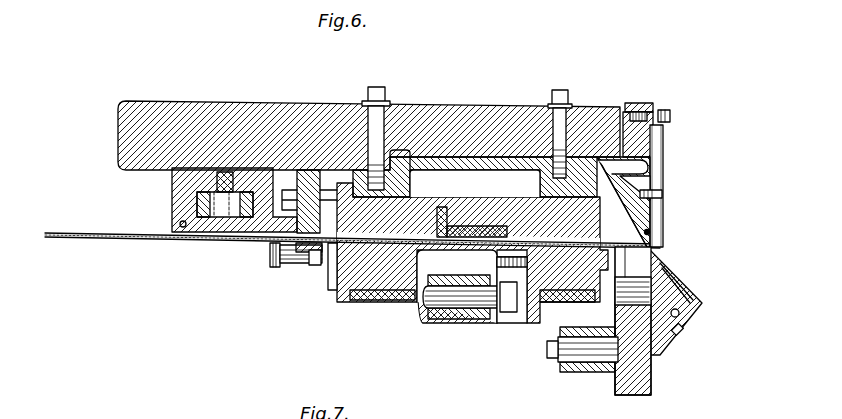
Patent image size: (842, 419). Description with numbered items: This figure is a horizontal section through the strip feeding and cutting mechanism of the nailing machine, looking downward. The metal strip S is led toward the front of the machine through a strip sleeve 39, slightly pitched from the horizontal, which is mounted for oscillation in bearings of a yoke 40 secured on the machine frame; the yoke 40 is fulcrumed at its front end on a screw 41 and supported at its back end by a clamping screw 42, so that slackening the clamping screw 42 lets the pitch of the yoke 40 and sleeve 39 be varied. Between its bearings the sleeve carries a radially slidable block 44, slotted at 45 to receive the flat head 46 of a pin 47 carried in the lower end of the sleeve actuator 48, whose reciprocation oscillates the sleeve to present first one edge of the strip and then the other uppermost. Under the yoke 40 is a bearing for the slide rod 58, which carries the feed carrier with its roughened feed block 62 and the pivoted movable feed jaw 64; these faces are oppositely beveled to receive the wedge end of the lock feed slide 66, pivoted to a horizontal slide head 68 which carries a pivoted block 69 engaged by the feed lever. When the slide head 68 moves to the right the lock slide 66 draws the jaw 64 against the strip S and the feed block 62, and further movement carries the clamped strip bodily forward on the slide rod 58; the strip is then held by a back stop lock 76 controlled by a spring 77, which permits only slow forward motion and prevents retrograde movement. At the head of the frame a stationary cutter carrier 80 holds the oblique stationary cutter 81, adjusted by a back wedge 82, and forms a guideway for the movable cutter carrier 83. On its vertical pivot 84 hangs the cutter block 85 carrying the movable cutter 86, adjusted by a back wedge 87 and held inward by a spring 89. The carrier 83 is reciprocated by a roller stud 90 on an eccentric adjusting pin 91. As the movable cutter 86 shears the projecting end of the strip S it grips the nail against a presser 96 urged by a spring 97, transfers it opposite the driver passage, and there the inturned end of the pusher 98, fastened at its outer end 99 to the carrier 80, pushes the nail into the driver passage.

The strip sleeve 39 is at (424, 200).
The yoke 40 is at (455, 150).
The screw 41 is at (575, 115).
The clamping screw 42 is at (385, 102).
The radially slidable block 44 is at (538, 309).
The slot 45 is at (502, 322).
The flat head 46 is at (510, 312).
The pin 47 is at (445, 309).
The sleeve actuator 48 is at (428, 319).
The slide rod 58 is at (331, 245).
The feed block 62 is at (300, 254).
The movable feed jaw 64 is at (300, 172).
The lock feed slide 66 is at (221, 218).
The slide head 68 is at (178, 197).
The pivoted block 69 is at (190, 232).
The back stop lock 76 is at (455, 210).
The spring 77 is at (481, 226).
The stationary cutter carrier 80 is at (648, 104).
The stationary cutter 81 is at (650, 230).
The back wedge 82 is at (662, 196).
The movable cutter carrier 83 is at (660, 350).
The vertical pivot 84 is at (688, 310).
The cutter block 85 is at (702, 300).
The movable cutter 86 is at (668, 283).
The back wedge 87 is at (690, 287).
The spring 89 is at (687, 323).
The roller stud 90 is at (634, 368).
The eccentric adjusting pin 91 is at (575, 362).
The presser 96 is at (663, 205).
The spring 97 is at (643, 166).
The pusher 98 is at (655, 158).
The outer end 99 is at (671, 116).
The metal strip S is at (68, 238).